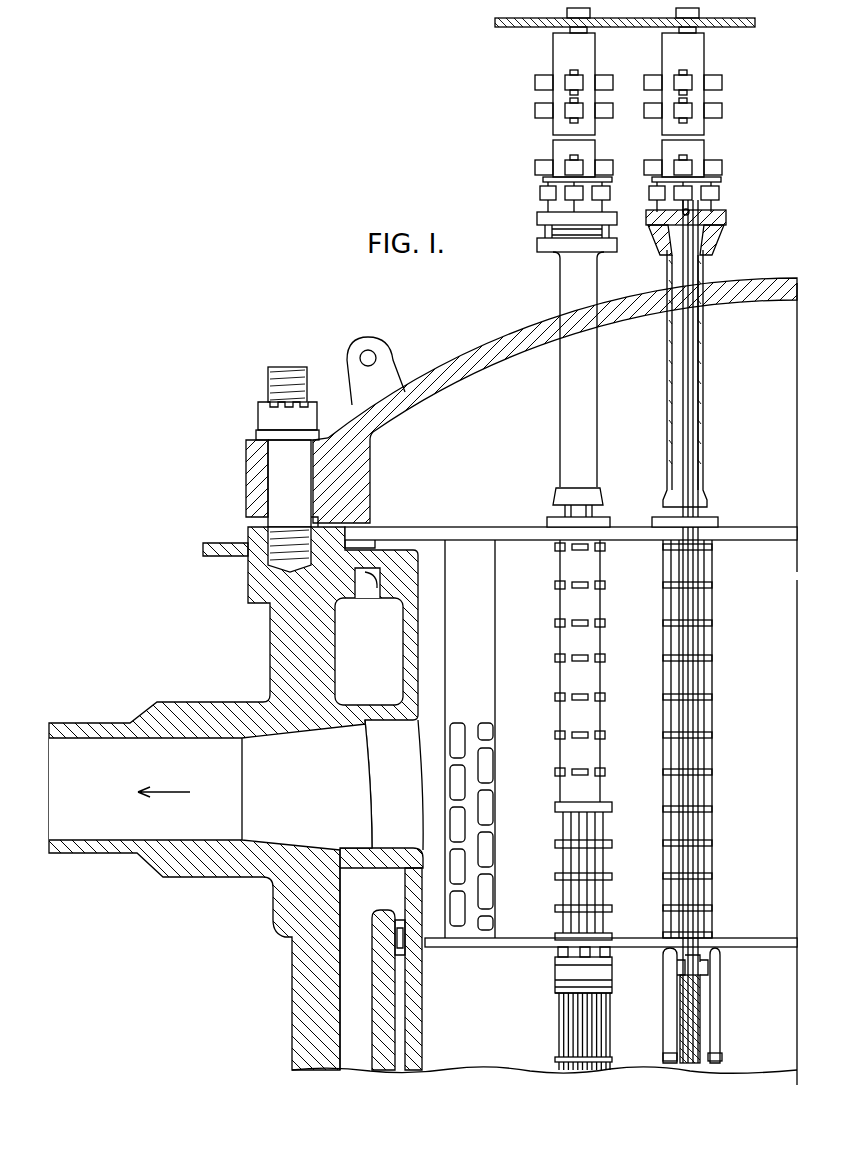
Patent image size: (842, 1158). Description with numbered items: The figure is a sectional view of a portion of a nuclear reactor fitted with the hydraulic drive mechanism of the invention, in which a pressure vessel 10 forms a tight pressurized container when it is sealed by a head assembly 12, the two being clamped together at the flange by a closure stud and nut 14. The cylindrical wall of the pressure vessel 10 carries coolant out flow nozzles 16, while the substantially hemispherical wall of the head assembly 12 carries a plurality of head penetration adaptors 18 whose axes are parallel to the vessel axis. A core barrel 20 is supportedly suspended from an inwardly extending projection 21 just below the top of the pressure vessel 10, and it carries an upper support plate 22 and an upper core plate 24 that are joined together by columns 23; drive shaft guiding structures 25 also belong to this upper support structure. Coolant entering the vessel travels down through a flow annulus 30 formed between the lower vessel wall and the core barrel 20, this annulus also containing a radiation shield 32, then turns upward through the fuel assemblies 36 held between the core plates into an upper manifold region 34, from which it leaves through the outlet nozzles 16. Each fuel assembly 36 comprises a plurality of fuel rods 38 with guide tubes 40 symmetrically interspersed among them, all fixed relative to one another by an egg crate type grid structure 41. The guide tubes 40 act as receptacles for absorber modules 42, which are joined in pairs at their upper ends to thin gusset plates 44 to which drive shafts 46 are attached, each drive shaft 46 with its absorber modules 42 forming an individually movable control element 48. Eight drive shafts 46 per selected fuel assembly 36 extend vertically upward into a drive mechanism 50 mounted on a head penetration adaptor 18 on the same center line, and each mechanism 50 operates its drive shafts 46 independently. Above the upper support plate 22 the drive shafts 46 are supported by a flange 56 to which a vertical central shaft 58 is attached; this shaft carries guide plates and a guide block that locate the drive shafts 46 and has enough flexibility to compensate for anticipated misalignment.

The pressure vessel 10 is at (292, 988).
The head assembly 12 is at (472, 362).
The closure stud and nut 14 is at (282, 469).
The coolant out flow nozzles 16 is at (182, 705).
The head penetration adaptors 18 is at (560, 285).
The core barrel 20 is at (401, 642).
The inwardly extending projection 21 is at (366, 576).
The upper support plate 22 is at (527, 541).
The columns 23 is at (490, 677).
The upper core plate 24 is at (527, 938).
The drive shaft guiding structures 25 is at (604, 683).
The flow annulus 30 is at (343, 1072).
The radiation shield 32 is at (366, 1048).
The upper manifold region 34 is at (648, 760).
The fuel assemblies 36 is at (644, 978).
The fuel rods 38 is at (578, 1010).
The guide tubes 40 is at (585, 1030).
The egg crate type grid structure 41 is at (663, 1057).
The absorber modules 42 is at (690, 1008).
The gusset plates 44 is at (700, 965).
The drive shafts 46 is at (590, 894).
The control elements 48 is at (736, 1030).
The drive mechanism 50 is at (553, 124).
The flange 56 is at (600, 519).
The vertical central shaft 58 is at (690, 457).